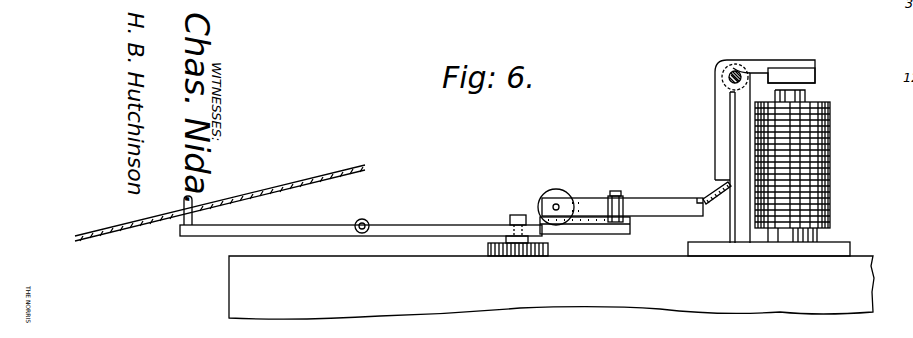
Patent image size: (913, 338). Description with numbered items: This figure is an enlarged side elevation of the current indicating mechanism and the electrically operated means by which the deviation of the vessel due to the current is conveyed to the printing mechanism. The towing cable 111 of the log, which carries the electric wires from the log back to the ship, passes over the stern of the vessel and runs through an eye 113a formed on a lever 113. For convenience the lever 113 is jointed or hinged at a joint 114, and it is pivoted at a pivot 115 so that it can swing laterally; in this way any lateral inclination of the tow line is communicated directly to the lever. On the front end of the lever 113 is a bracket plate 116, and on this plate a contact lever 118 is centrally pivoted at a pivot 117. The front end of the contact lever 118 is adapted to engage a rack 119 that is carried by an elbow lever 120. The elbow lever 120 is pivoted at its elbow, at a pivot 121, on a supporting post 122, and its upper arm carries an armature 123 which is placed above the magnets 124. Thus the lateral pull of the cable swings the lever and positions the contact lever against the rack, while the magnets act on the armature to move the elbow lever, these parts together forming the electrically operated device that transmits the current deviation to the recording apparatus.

The towing cable 111 is at (140, 226).
The lever 113 is at (323, 226).
The eye 113a is at (196, 200).
The joint 114 is at (369, 223).
The pivot 115 is at (518, 212).
The bracket plate 116 is at (598, 227).
The pivot 117 is at (617, 196).
The contact lever 118 is at (667, 216).
The rack 119 is at (712, 196).
The elbow lever 120 is at (714, 141).
The pivot 121 is at (561, 191).
The supporting post 122 is at (740, 217).
The armature 123 is at (815, 82).
The magnets 124 is at (830, 200).